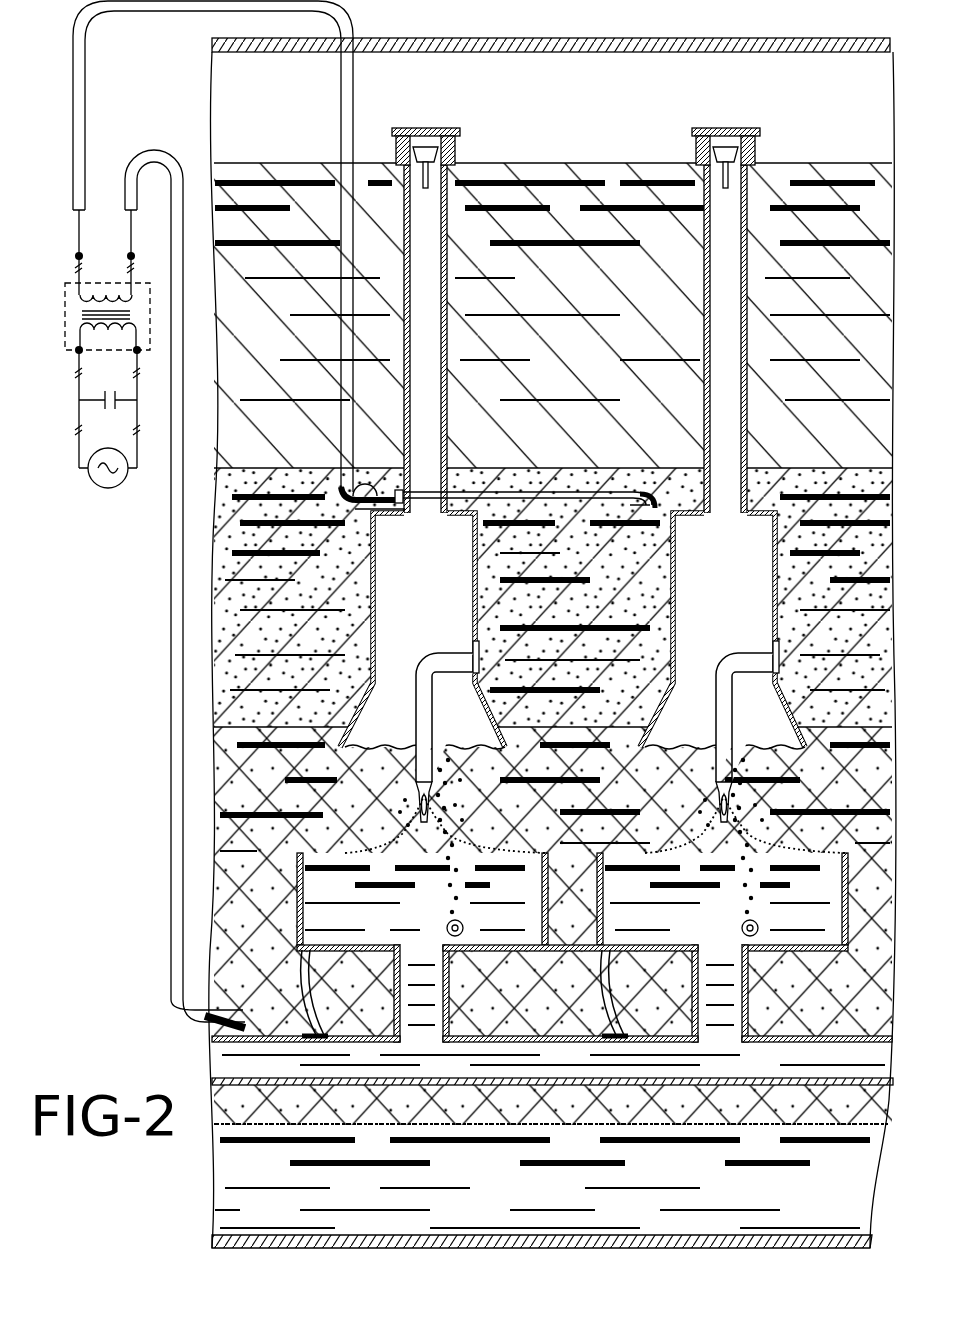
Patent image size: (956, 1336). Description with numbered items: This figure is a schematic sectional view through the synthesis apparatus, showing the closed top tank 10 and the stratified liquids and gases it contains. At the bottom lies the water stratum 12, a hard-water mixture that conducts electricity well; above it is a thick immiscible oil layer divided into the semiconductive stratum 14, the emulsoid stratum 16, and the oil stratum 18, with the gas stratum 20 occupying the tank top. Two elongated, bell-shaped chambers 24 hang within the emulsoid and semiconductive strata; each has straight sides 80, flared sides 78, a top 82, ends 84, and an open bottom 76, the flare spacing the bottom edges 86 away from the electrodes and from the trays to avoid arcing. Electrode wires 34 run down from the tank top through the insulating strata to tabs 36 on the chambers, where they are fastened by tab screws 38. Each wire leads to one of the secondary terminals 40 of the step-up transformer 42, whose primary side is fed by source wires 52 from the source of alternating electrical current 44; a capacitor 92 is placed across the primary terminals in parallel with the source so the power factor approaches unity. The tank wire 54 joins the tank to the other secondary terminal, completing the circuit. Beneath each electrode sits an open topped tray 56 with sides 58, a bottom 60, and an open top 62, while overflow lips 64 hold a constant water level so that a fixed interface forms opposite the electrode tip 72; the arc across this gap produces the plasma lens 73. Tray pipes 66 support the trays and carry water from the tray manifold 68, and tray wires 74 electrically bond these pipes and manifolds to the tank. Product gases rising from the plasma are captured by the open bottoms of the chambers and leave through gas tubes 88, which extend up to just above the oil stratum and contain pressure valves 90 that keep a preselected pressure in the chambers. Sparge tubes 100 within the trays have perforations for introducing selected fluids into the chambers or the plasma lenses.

The closed top tank 10 is at (600, 54).
The water stratum 12 is at (225, 1169).
The semiconductive stratum 14 is at (217, 772).
The emulsoid stratum 16 is at (217, 535).
The oil stratum 18 is at (217, 313).
The gas stratum 20 is at (219, 93).
The elongated chambers 24 is at (371, 587).
The electrode wires 34 is at (341, 291).
The tabs 36 is at (375, 520).
The tab screws 38 is at (398, 486).
The secondary terminals 40 is at (132, 252).
The transformer 42 is at (68, 310).
The source of alternating electrical current 44 is at (112, 488).
The source wires 52 is at (135, 358).
The tank wire 54 is at (170, 641).
The open topped tray 56 is at (598, 966).
The sides 58 is at (305, 885).
The bottom 60 is at (404, 946).
The open top 62 is at (343, 852).
The overflow lips 64 is at (587, 852).
The tray pipes 66 is at (396, 978).
The tray manifold 68 is at (502, 1014).
The electrode tip 72 is at (423, 657).
The plasma lens 73 is at (401, 830).
The tray wires 74 is at (303, 997).
The open bottom 76 is at (368, 750).
The flared sides 78 is at (482, 744).
The straight sides 80 is at (475, 602).
The top 82 is at (402, 515).
The ends 84 is at (448, 600).
The bottom edges 86 is at (357, 750).
The gas tubes 88 is at (448, 366).
The pressure valves 90 is at (453, 160).
The capacitor 92 is at (104, 398).
The sparge tubes 100 is at (456, 922).